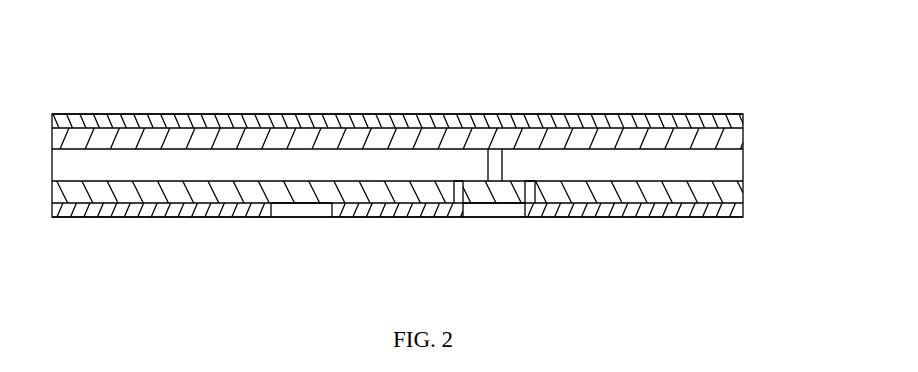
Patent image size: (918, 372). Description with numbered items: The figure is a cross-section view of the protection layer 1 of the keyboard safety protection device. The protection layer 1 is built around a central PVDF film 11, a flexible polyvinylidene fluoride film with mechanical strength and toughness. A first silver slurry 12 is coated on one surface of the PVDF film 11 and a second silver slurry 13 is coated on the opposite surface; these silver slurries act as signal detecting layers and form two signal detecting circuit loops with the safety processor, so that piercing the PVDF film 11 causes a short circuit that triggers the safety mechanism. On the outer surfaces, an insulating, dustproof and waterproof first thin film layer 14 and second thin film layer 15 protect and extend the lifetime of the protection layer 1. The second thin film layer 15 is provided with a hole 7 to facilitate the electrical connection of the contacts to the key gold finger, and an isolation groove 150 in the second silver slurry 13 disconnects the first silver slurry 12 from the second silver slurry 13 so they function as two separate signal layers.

The protection layer 1 is at (237, 89).
The first thin film layer 14 is at (729, 117).
The first silver slurry 12 is at (729, 138).
The PVDF film 11 is at (729, 165).
The second silver slurry 13 is at (729, 193).
The second thin film layer 15 is at (735, 213).
The hole 7 is at (283, 208).
The isolation groove 150 is at (531, 198).